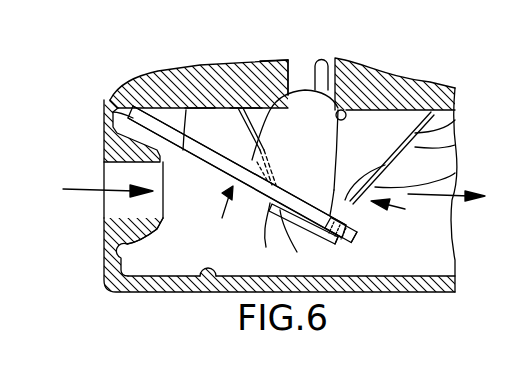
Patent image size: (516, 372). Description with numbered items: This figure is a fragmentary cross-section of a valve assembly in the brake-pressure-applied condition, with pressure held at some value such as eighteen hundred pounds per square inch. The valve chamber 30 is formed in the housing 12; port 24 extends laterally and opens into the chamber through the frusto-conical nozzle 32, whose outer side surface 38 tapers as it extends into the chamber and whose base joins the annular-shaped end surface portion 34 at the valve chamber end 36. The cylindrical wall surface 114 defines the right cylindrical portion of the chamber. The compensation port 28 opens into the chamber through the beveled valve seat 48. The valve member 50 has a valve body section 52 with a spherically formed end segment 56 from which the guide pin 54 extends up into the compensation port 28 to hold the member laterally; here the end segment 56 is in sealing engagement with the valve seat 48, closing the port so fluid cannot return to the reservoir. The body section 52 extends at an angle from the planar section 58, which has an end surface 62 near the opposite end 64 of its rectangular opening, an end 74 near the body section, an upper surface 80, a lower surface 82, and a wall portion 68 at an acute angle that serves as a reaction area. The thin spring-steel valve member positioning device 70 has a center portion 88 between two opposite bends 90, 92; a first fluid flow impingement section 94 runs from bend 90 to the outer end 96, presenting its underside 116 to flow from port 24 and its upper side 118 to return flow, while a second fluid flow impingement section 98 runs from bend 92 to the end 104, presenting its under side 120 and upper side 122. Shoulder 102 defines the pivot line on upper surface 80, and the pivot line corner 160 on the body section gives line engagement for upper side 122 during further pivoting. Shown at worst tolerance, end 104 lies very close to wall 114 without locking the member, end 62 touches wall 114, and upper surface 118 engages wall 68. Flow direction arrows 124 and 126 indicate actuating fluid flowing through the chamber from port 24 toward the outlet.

The housing 12 is at (143, 83).
The port 24 is at (117, 208).
The compensation port 28 is at (300, 63).
The valve chamber 30 is at (147, 266).
The nozzle 32 is at (110, 150).
The annular-shaped end surface portion 34 is at (105, 244).
The valve chamber end 36 is at (118, 113).
The outer side surface of nozzle 38 is at (143, 234).
The valve seat 48 is at (351, 93).
The valve member 50 is at (218, 216).
The valve body section 52 is at (318, 153).
The guide pin 54 is at (318, 67).
The spherically formed end segment 56 is at (286, 57).
The planar section 58 is at (178, 135).
The end surface 62 is at (110, 100).
The opposite end of opening 64 is at (163, 124).
The wall portion 68 is at (252, 190).
The valve member positioning device 70 is at (405, 213).
The end of planar section 74 is at (358, 229).
The upper surface of planar section 80 is at (192, 114).
The lower surface of planar section 82 is at (203, 161).
The center portion 88 is at (335, 229).
The bend 90 is at (296, 229).
The bend 92 is at (358, 236).
The first fluid flow impingement section 94 is at (268, 236).
The outer end 96 is at (253, 107).
The second fluid flow impingement section 98 is at (453, 173).
The shoulder 102 is at (358, 219).
The end of device 104 is at (446, 100).
The cylindrical wall surface 114 is at (200, 278).
The underside of first impingement section 116 is at (256, 130).
The upper side of first impingement section 118 is at (258, 130).
The under side of second impingement section 120 is at (455, 120).
The upper side of second impingement section 122 is at (455, 145).
The flow direction arrow 124 is at (107, 187).
The flow direction arrow 126 is at (446, 199).
The pivot line corner 160 is at (385, 163).